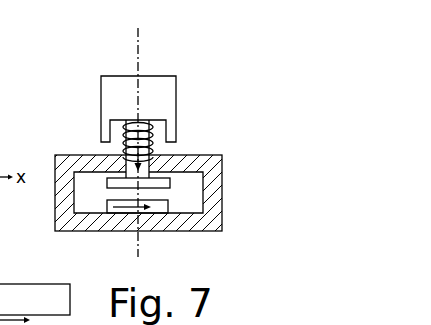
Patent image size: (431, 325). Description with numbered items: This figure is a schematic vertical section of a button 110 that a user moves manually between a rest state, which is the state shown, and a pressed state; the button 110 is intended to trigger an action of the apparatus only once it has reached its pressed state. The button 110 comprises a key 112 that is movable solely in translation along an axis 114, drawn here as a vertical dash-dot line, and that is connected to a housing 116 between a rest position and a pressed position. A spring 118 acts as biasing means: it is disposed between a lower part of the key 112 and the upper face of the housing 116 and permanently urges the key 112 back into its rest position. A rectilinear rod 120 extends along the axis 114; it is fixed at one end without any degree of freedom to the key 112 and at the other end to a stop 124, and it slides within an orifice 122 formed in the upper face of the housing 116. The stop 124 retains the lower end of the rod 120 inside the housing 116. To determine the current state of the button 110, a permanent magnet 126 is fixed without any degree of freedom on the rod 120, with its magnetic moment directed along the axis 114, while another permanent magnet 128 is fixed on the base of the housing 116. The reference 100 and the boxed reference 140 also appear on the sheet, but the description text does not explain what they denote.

The measuring system 100 is at (12, 26).
The button 110 is at (201, 120).
The key 112 is at (155, 97).
The axis 114 is at (140, 37).
The housing 116 is at (213, 202).
The spring 118 is at (150, 135).
The rectilinear rod 120 is at (147, 173).
The orifice 122 is at (150, 142).
The stop 124 is at (106, 183).
The permanent magnet 126 is at (123, 153).
The permanent magnet 128 is at (162, 208).
The controller 140 is at (35, 303).